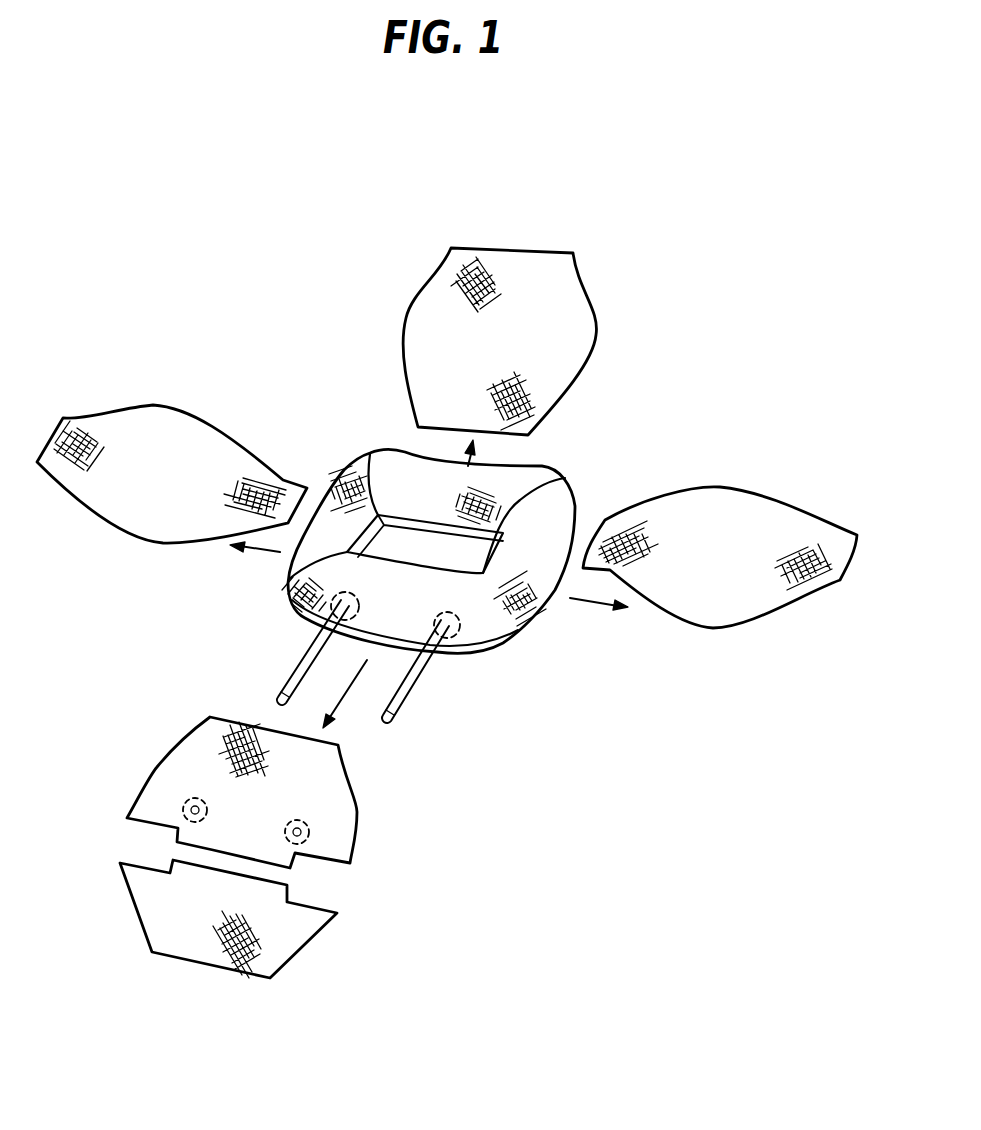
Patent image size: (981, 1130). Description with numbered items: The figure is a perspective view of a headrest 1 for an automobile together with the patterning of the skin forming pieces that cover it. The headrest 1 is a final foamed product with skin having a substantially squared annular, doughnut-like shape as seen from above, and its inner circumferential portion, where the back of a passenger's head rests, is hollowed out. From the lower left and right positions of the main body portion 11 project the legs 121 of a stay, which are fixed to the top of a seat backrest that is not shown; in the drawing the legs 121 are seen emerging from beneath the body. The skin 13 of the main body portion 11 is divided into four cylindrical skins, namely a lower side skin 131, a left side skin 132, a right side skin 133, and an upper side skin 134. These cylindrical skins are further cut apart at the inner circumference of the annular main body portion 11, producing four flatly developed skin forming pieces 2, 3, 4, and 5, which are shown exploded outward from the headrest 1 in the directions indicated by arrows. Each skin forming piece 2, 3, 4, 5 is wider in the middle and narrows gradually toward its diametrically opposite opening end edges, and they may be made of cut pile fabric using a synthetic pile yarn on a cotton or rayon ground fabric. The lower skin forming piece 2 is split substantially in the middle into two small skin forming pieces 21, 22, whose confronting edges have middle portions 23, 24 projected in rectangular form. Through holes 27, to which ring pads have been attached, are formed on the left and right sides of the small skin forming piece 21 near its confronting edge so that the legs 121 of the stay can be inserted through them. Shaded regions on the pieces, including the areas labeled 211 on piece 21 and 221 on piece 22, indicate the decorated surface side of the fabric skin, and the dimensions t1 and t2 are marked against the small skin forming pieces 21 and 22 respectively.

The headrest 1 is at (335, 482).
The skin forming piece 2 is at (343, 903).
The skin forming piece 3 is at (153, 405).
The skin forming piece 4 is at (750, 487).
The skin forming piece 5 is at (519, 248).
The main body portion 11 is at (565, 478).
The skin 13 is at (385, 467).
The small skin forming piece 21 is at (355, 815).
The small skin forming piece 22 is at (307, 950).
The middle portion 23 is at (227, 848).
The middle portion 24 is at (227, 878).
The through hole 27 is at (190, 810).
The leg 121 is at (298, 663).
The cylindrical skin 131 is at (397, 625).
The cylindrical skin 132 is at (319, 541).
The cylindrical skin 133 is at (570, 647).
The cylindrical skin 134 is at (432, 480).
The textured surface of upper base member 211 is at (247, 720).
The textured surface of lower base member 221 is at (217, 970).
The thickness of upper base member t1 is at (210, 717).
The thickness of lower base member t2 is at (152, 953).